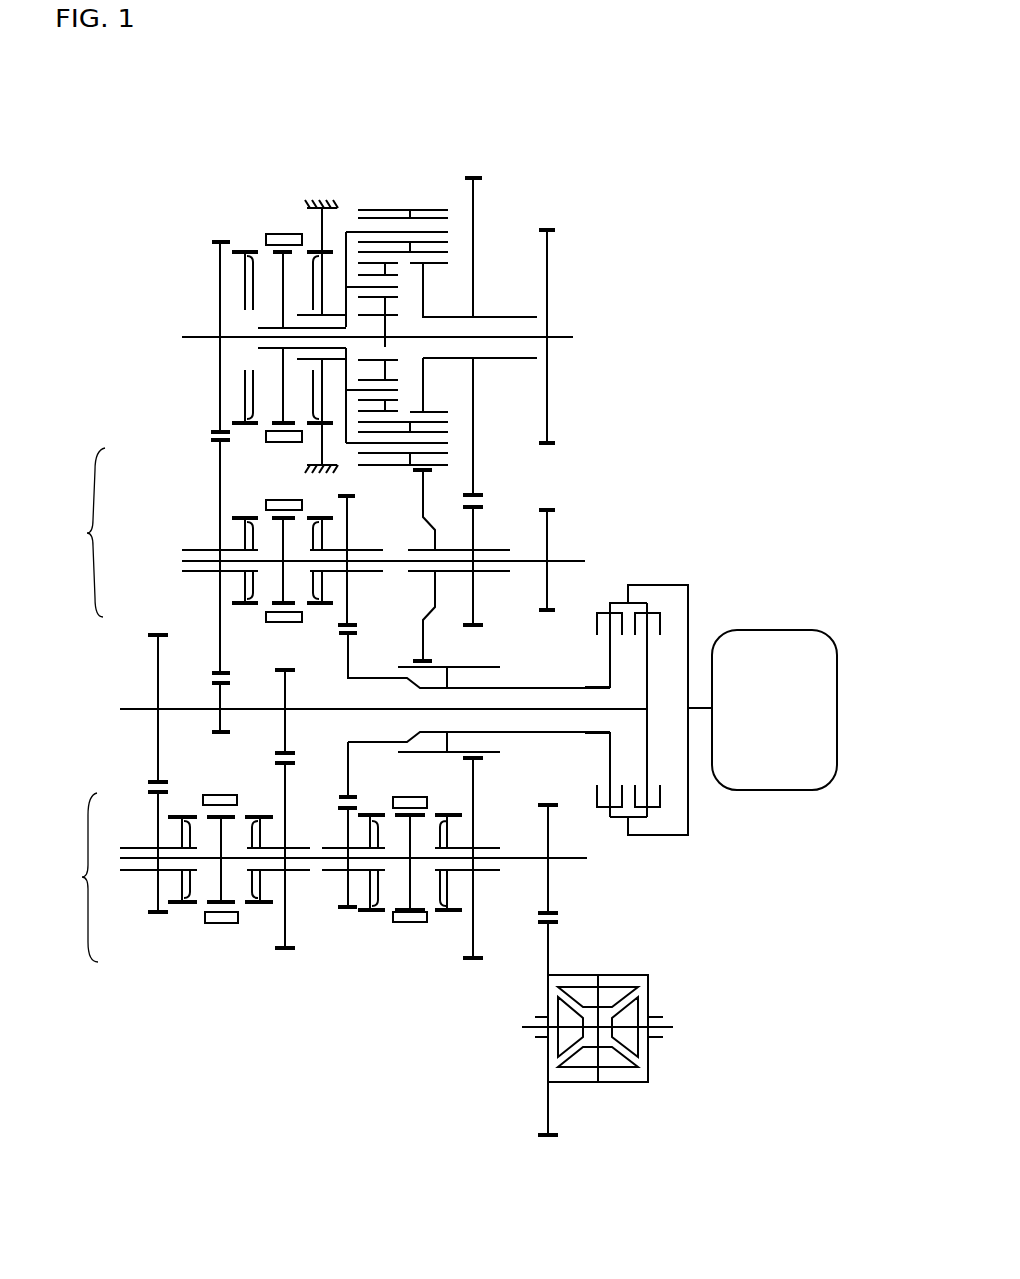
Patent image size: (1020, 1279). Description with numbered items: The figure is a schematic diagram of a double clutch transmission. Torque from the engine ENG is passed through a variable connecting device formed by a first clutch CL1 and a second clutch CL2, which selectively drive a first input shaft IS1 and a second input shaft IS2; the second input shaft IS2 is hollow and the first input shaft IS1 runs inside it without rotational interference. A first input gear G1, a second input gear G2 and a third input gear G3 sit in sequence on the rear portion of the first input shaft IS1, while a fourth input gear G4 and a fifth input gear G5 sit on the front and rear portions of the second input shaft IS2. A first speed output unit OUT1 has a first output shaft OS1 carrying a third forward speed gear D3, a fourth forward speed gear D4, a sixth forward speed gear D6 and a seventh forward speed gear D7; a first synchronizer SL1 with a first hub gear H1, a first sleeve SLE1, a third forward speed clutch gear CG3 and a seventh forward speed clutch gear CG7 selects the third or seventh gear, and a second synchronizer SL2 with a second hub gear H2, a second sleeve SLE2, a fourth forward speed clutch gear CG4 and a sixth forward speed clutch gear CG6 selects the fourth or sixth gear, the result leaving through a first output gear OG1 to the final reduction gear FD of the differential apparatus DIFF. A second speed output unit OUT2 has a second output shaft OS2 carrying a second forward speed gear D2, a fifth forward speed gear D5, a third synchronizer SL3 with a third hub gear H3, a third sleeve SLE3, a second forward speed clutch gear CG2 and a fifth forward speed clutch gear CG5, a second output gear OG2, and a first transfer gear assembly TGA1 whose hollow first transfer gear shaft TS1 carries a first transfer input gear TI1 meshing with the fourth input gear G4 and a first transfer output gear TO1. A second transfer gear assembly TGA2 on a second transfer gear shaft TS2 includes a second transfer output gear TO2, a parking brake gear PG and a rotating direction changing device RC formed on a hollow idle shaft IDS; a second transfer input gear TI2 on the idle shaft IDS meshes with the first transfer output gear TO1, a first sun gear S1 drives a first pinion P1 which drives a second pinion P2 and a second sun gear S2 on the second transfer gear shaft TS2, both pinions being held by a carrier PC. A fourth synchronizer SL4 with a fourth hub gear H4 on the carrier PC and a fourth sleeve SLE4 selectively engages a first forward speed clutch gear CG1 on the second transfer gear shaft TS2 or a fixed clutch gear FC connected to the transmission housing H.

The idle shaft IDS is at (510, 360).
The second output shaft OS2 is at (573, 558).
The second speed output unit OUT2 is at (53, 532).
The first output shaft OS1 is at (573, 853).
The first speed output unit OUT1 is at (46, 877).
The first input shaft IS1 is at (577, 712).
The second input shaft IS2 is at (537, 733).
The fourth input gear G4 is at (448, 672).
The fifth input gear G5 is at (348, 653).
The engine ENG is at (762, 710).
The first clutch CL1 is at (657, 601).
The second clutch CL2 is at (607, 596).
The second transfer gear assembly TGA2 is at (476, 218).
The rotating direction changing device RC is at (393, 193).
The first pinion P1 is at (422, 209).
The second pinion P2 is at (370, 262).
The first sun gear S1 is at (448, 265).
The second sun gear S2 is at (387, 327).
The carrier PC is at (346, 238).
The first transfer gear assembly TGA1 is at (530, 476).
The second transfer input gear TI2 is at (473, 215).
The parking brake gear PG is at (547, 248).
The second transfer gear shaft TS2 is at (565, 337).
The second output gear OG2 is at (548, 572).
The first transfer input gear TI1 is at (423, 495).
The first transfer output gear TO1 is at (475, 517).
The first transfer gear shaft TS1 is at (511, 619).
The second transfer output gear TO2 is at (220, 285).
The second forward speed gear D2 is at (220, 492).
The second input gear G2 is at (217, 695).
The fourth synchronizer SL4 is at (238, 294).
The fourth hub gear H4 is at (263, 330).
The first forward speed clutch gear CG1 is at (280, 316).
The fixed clutch gear FC is at (310, 268).
The transmission housing H is at (318, 199).
The fourth sleeve SLE4 is at (276, 301).
The third synchronizer SL3 is at (266, 533).
The third hub gear H3 is at (283, 530).
The second forward speed clutch gear CG2 is at (247, 585).
The fifth forward speed clutch gear CG5 is at (320, 583).
The third sleeve SLE3 is at (267, 625).
The fifth forward speed gear D5 is at (350, 517).
The third input gear G3 is at (158, 685).
The sixth forward speed gear D6 is at (158, 897).
The first input gear G1 is at (287, 680).
The fourth forward speed gear D4 is at (289, 922).
The second synchronizer SL2 is at (201, 906).
The second hub gear H2 is at (218, 830).
The sixth forward speed clutch gear CG6 is at (192, 903).
The fourth forward speed clutch gear CG4 is at (255, 903).
The second sleeve SLE2 is at (215, 920).
The first synchronizer SL1 is at (446, 928).
The first hub gear H1 is at (410, 832).
The seventh forward speed clutch gear CG7 is at (385, 903).
The third forward speed clutch gear CG3 is at (448, 906).
The first sleeve SLE1 is at (405, 922).
The seventh forward speed gear D7 is at (348, 903).
The third forward speed gear D3 is at (475, 948).
The first output gear OG1 is at (550, 892).
The final reduction gear FD is at (550, 952).
The differential apparatus DIFF is at (673, 968).